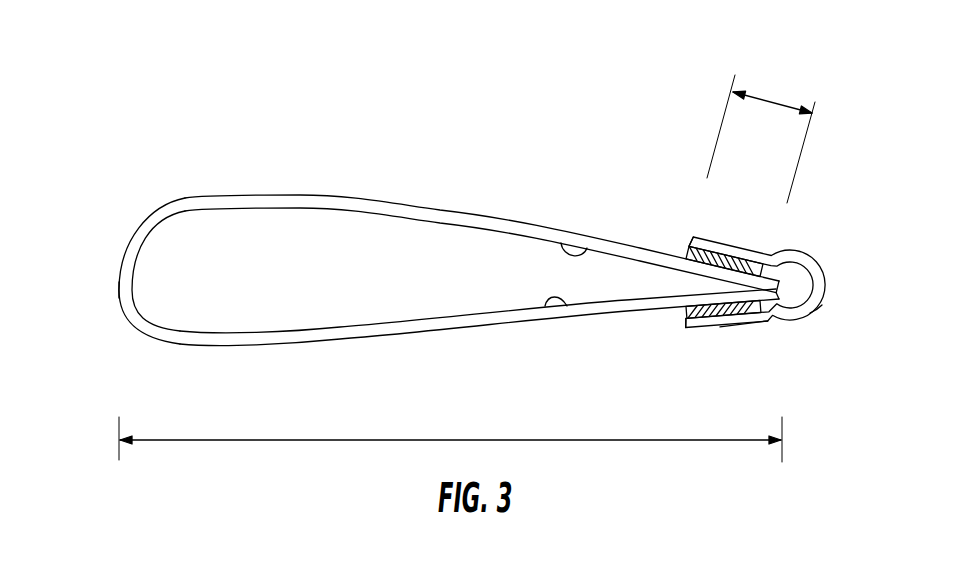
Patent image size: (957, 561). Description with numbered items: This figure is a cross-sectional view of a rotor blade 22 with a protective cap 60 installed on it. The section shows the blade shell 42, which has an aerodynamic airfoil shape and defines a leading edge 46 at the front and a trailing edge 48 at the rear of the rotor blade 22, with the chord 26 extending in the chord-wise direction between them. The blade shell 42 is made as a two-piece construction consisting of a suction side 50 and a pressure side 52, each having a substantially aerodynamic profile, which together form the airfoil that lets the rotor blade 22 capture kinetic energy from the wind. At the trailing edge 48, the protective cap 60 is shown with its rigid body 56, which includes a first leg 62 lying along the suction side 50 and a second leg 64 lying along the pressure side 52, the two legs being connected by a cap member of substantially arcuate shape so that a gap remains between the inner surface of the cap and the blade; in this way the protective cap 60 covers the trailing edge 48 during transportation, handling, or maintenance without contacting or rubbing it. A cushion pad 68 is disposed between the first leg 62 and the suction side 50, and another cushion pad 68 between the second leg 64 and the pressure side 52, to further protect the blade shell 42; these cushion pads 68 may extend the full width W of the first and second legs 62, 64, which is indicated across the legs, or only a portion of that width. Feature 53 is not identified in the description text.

The rotor blade 22 is at (252, 108).
The blade shell 42 is at (170, 191).
The leading edge 46 is at (118, 289).
The suction side 50 is at (457, 209).
The pressure side 52 is at (454, 331).
The rib/stiffener 53 is at (568, 254).
The protective cap 60 is at (815, 220).
The first leg 62 is at (734, 240).
The second leg 64 is at (718, 316).
The cushion pad 68 is at (691, 237).
The rigid body 56 is at (737, 332).
The trailing edge 48 is at (810, 313).
The chord 26 is at (493, 440).
The width W is at (772, 101).